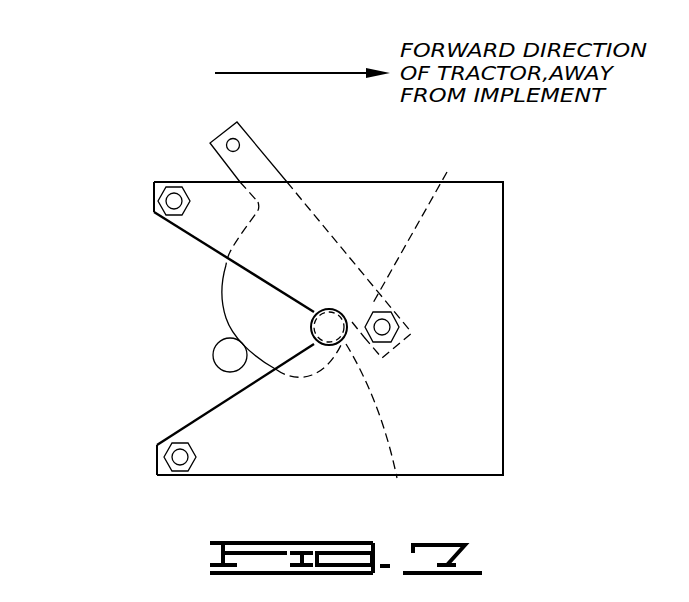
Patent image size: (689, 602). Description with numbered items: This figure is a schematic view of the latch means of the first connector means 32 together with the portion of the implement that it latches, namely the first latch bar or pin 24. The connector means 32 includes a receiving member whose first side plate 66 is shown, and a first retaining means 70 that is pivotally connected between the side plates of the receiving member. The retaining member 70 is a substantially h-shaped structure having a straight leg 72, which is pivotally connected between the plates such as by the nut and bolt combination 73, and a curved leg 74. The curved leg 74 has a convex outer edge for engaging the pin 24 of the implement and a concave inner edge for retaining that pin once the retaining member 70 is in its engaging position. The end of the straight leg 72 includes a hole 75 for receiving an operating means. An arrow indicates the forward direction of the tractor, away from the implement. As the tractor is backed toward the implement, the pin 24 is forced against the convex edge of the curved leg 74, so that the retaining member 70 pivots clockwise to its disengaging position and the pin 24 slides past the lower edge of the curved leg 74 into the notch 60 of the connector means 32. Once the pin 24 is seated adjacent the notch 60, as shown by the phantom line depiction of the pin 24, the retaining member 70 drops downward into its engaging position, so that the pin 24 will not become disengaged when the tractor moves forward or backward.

The first latch bar or pin 24 is at (225, 362).
The first connector means 32 is at (128, 462).
The notch 60 is at (341, 352).
The first side plate 66 is at (493, 222).
The first retaining means 70 is at (292, 170).
The straight leg 72 is at (418, 227).
The nut and bolt combination 73 is at (414, 332).
The curved leg 74 is at (224, 299).
The hole 75 is at (240, 143).